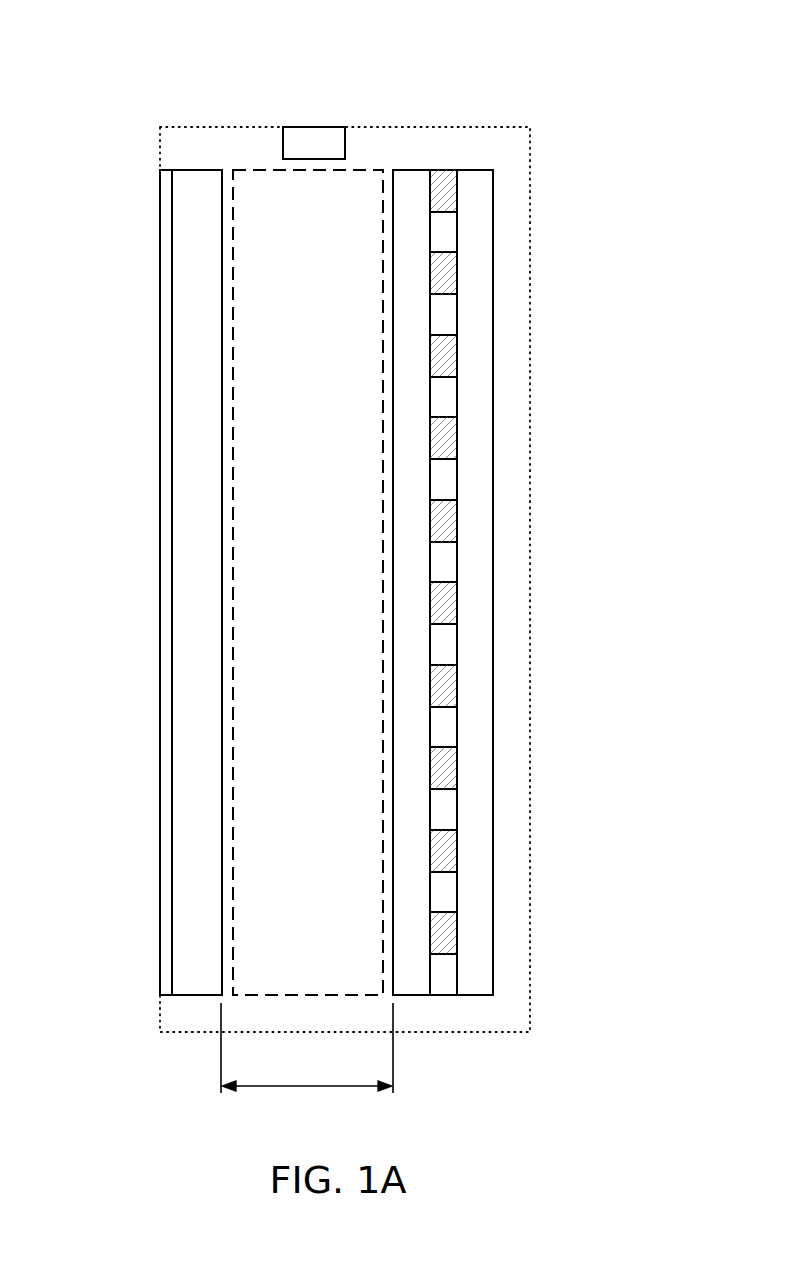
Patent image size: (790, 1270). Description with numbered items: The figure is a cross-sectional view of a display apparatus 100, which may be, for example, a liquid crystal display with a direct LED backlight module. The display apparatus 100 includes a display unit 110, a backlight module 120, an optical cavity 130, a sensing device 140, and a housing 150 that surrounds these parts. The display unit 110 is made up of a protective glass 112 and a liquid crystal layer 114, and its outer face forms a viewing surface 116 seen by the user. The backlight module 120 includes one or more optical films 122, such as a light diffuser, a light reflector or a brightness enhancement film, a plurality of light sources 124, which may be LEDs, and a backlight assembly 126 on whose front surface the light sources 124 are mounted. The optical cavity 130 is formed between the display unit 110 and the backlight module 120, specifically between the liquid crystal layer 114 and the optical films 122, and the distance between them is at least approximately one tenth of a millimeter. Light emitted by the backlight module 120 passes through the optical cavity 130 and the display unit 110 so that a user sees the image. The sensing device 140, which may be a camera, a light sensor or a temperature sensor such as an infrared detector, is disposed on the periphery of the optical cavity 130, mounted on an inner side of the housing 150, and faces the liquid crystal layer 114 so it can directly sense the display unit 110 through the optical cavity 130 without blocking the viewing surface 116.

The display apparatus 100 is at (638, 57).
The display unit 110 is at (140, 503).
The protective glass 112 is at (165, 170).
The liquid crystal layer 114 is at (196, 170).
The viewing surface 116 is at (160, 493).
The backlight module 120 is at (452, 503).
The optical films 122 is at (408, 170).
The light sources 124 is at (441, 170).
The backlight assembly 126 is at (492, 526).
The optical cavity 130 is at (262, 170).
The sensing device 140 is at (312, 130).
The housing 150 is at (533, 280).